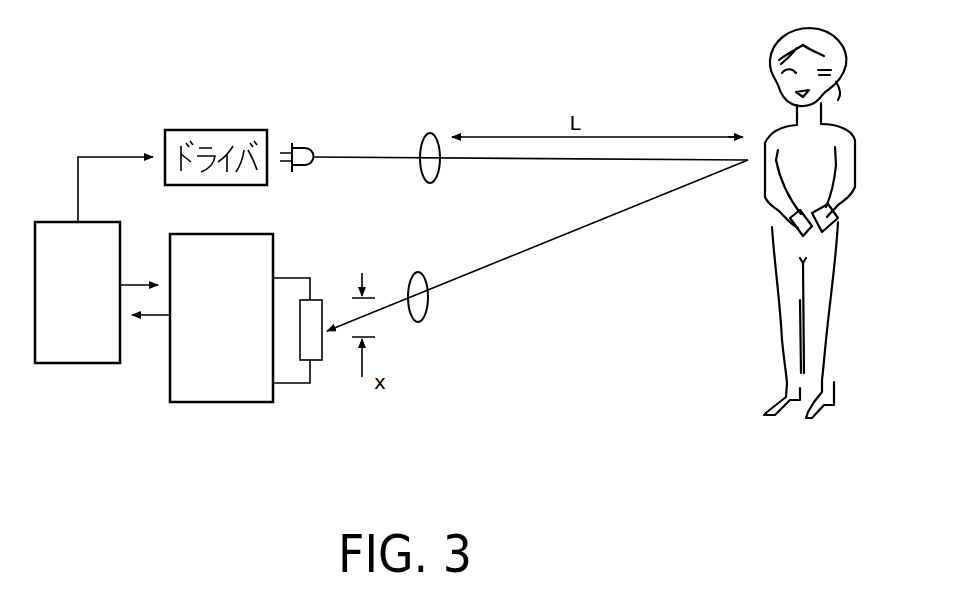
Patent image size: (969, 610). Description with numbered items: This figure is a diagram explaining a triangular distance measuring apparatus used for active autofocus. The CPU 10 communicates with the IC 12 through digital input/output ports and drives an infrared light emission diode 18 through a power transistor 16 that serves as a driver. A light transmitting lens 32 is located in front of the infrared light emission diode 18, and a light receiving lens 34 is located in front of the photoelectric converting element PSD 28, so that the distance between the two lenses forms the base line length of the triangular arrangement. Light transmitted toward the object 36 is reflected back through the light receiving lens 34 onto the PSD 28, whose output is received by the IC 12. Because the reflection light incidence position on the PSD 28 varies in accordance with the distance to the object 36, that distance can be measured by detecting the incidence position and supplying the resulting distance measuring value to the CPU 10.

The CPU 10 is at (73, 363).
The IC 12 is at (230, 402).
The power transistor 16 is at (230, 130).
The infrared light emission diode 18 is at (305, 148).
The photoelectric converting element PSD 28 is at (322, 300).
The light transmitting lens 32 is at (435, 133).
The light receiving lens 34 is at (421, 272).
The object 36 is at (847, 237).